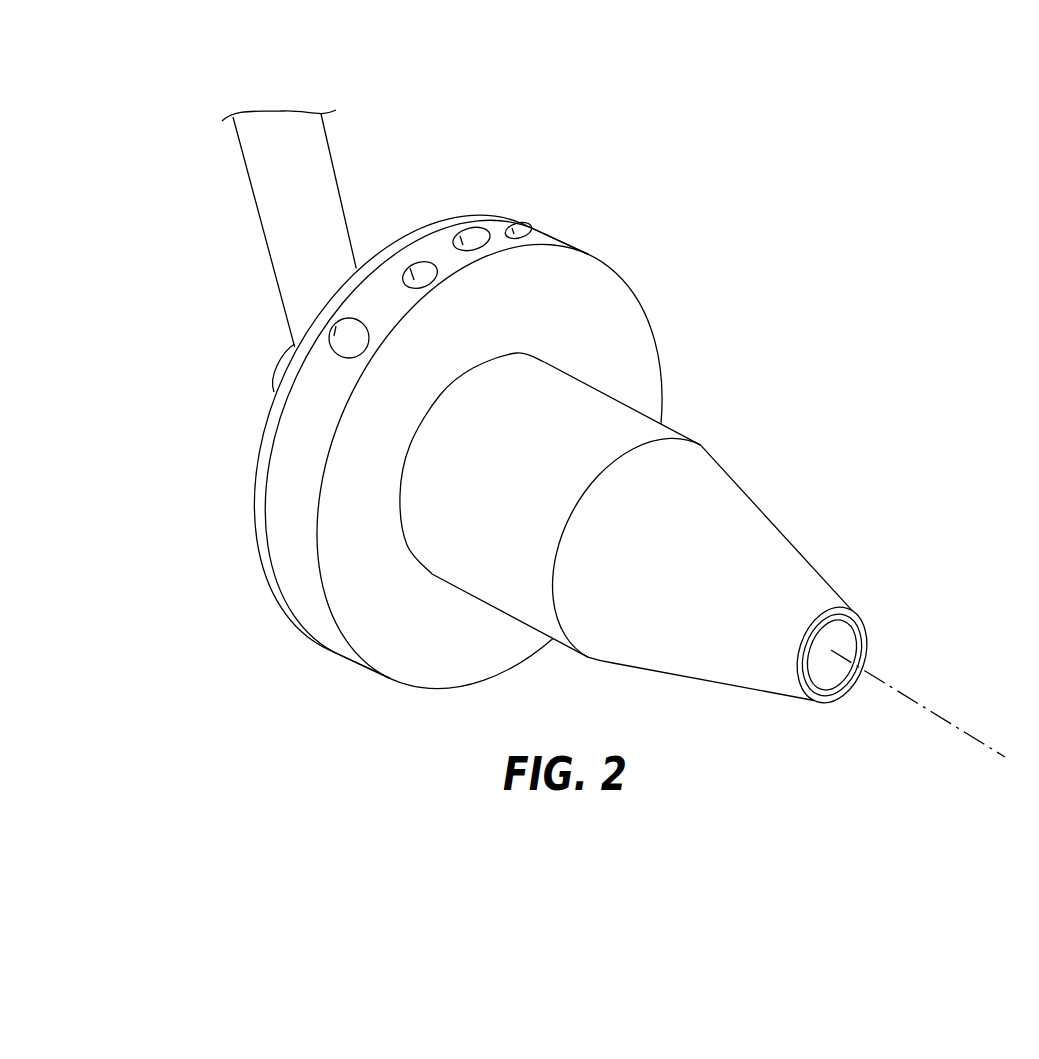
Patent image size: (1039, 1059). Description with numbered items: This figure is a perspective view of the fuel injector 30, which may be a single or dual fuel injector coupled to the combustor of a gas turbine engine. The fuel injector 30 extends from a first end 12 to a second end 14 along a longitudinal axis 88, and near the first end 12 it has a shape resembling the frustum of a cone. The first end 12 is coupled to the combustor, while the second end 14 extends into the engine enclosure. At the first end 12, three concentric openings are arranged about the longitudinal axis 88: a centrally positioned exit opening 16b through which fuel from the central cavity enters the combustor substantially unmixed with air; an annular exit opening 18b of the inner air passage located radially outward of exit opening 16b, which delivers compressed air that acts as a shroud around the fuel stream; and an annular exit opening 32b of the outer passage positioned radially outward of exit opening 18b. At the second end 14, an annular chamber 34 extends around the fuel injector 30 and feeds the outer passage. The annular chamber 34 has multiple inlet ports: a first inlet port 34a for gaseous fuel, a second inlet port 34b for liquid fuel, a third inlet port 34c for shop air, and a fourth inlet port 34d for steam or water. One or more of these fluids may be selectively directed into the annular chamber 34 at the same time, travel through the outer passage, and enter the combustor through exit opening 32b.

The first end 12 is at (886, 672).
The second end 14 is at (245, 610).
The exit opening 16b is at (840, 649).
The exit opening 18b is at (866, 635).
The fuel injector 30 is at (829, 383).
The exit opening 32b is at (858, 608).
The annular chamber 34 is at (577, 286).
The first inlet port 34a is at (349, 336).
The second inlet port 34b is at (418, 272).
The third inlet port 34c is at (472, 238).
The fourth inlet port 34d is at (517, 231).
The longitudinal axis 88 is at (960, 731).